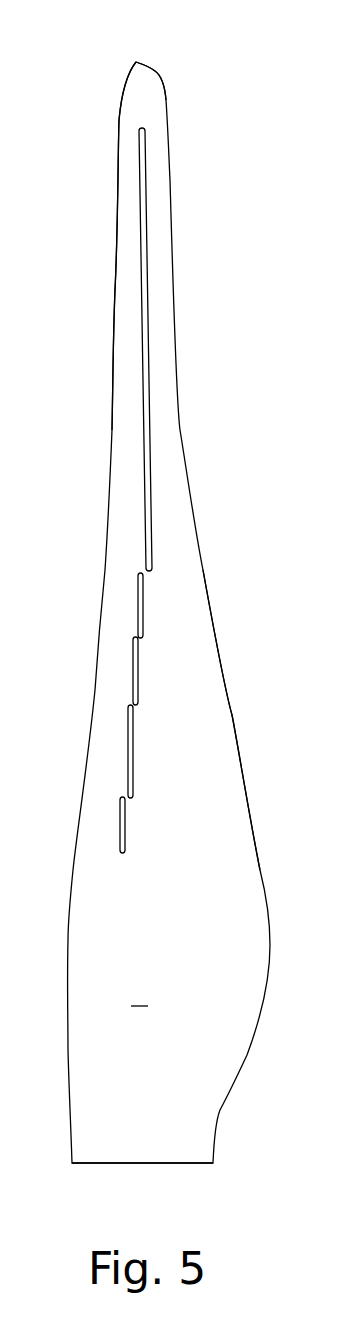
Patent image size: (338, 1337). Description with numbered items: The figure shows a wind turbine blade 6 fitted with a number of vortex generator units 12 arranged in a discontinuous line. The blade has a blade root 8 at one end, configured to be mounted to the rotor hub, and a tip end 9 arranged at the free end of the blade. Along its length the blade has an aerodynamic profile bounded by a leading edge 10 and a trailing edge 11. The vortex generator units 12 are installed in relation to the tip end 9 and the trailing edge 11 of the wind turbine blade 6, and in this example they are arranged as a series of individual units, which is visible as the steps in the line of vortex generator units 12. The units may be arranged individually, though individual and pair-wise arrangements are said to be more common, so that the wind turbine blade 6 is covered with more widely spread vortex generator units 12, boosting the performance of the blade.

The wind turbine blade 6 is at (169, 612).
The blade root 8 is at (142, 1145).
The tip end 9 is at (145, 87).
The leading edge 10 is at (115, 290).
The trailing edge 11 is at (232, 716).
The vortex generator units 12 is at (146, 233).